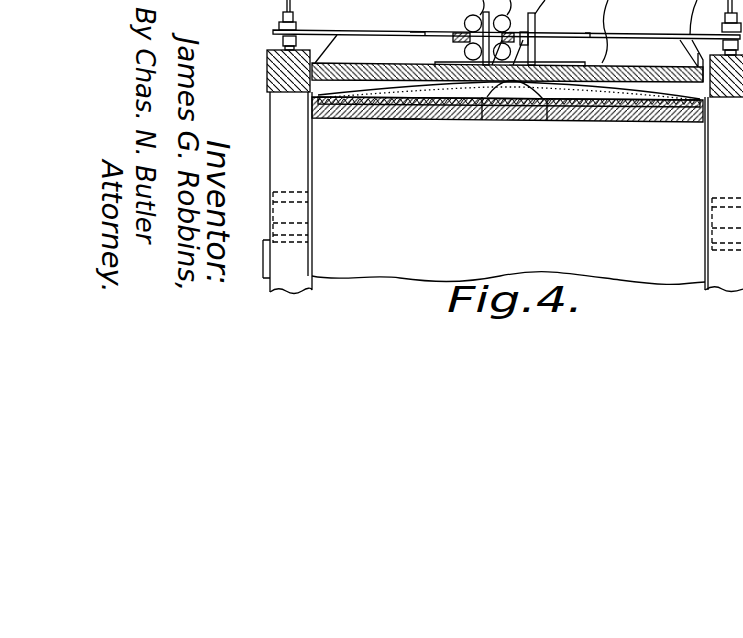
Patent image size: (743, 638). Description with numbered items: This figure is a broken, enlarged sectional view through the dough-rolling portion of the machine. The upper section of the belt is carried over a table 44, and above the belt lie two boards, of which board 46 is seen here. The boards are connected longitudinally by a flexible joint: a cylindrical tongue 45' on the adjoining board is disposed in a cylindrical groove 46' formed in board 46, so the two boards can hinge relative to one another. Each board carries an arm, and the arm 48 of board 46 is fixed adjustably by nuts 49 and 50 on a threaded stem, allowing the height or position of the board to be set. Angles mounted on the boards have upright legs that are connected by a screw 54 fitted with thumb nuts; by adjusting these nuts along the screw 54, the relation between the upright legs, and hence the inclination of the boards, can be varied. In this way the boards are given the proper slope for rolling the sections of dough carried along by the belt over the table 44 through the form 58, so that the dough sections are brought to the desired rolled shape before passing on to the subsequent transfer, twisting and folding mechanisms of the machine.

The table 44 is at (520, 123).
The cylindrical tongue 45' is at (529, 125).
The board 46 is at (507, 41).
The cylindrical groove 46' is at (509, 127).
The arm 48 is at (327, 27).
The nut 49 is at (280, 27).
The nut 50 is at (278, 38).
The screw 54 is at (460, 27).
The form 58 is at (397, 120).